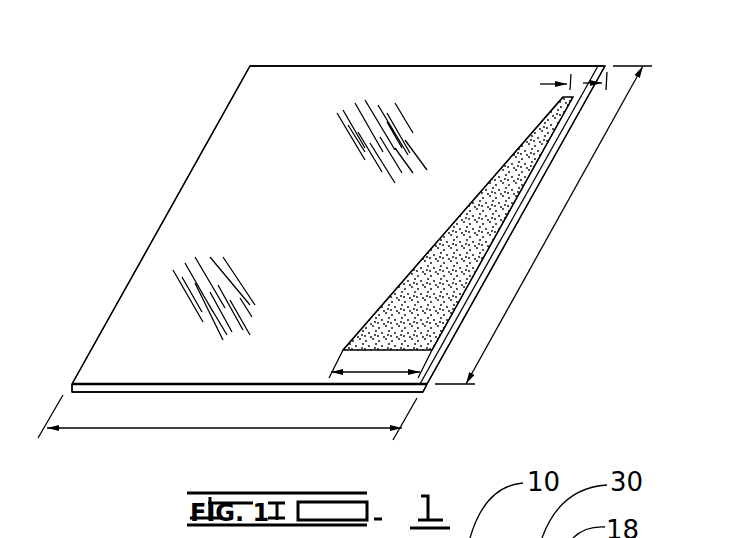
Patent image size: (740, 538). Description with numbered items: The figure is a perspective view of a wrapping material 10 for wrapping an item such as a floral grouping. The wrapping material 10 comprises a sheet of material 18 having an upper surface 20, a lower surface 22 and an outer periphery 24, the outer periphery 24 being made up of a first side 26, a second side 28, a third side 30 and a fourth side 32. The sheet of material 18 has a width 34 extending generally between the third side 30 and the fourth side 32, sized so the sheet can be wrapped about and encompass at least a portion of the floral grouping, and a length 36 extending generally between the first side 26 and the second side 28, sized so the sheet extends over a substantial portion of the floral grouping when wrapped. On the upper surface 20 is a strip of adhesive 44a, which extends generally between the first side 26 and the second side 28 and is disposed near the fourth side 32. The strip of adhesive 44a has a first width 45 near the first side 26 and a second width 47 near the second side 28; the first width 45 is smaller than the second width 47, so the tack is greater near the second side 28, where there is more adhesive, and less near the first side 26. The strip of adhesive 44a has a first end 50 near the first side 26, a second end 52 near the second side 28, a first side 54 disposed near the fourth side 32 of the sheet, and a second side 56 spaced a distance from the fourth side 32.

The wrapping material 10 is at (473, 47).
The sheet of material 18 is at (142, 258).
The upper surface 20 is at (252, 117).
The lower surface 22 is at (387, 395).
The outer periphery 24 is at (312, 393).
The first side 26 is at (317, 64).
The second side 28 is at (163, 387).
The third side 30 is at (192, 167).
The fourth side 32 is at (572, 128).
The width 34 is at (190, 430).
The length 36 is at (563, 207).
The strip of adhesive 44a is at (437, 257).
The first width 45 is at (607, 80).
The second width 47 is at (398, 372).
The first end 50 is at (577, 84).
The second end 52 is at (410, 392).
The first side 54 is at (493, 268).
The second side 56 is at (415, 293).